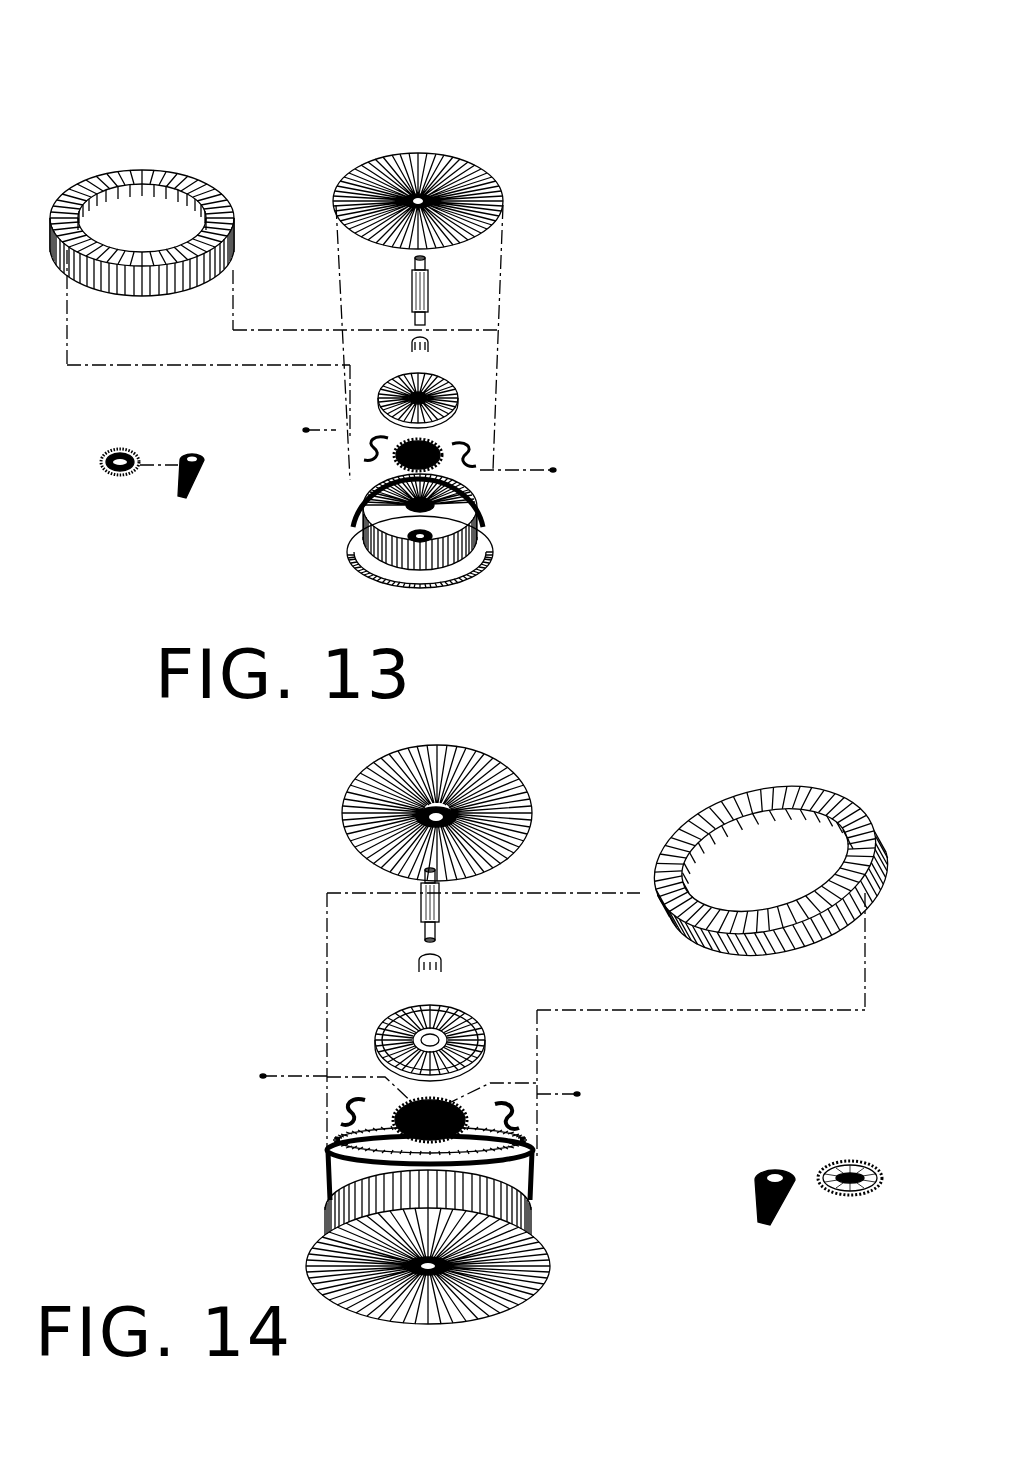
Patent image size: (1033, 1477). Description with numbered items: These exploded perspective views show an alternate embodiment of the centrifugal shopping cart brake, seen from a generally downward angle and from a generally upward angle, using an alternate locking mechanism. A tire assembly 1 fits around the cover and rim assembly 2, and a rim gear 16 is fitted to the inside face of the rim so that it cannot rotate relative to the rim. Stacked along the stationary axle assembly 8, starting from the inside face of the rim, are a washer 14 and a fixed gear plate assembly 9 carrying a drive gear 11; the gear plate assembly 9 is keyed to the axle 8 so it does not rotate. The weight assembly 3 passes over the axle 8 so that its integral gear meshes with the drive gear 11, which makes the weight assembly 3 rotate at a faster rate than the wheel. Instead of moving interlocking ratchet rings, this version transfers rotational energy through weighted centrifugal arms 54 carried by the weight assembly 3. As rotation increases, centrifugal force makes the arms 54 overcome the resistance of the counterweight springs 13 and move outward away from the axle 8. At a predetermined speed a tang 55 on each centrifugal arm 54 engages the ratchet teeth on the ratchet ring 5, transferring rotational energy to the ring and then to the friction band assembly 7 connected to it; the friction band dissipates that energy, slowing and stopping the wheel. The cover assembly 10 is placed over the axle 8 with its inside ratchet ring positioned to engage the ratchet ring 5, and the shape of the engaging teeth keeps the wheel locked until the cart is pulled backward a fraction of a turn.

In FIG. 13, the tire assembly 1 is at (172, 165).
In FIG. 14, the tire assembly 1 is at (712, 790).
In FIG. 13, the cover and rim assembly 2 is at (490, 555).
In FIG. 14, the cover and rim assembly 2 is at (310, 1242).
In FIG. 13, the weight assembly 3 is at (440, 445).
In FIG. 14, the weight assembly 3 is at (470, 1140).
In FIG. 13, the ratchet ring 5 is at (462, 398).
In FIG. 14, the ratchet ring 5 is at (380, 1020).
In FIG. 13, the friction band assembly 7 is at (440, 345).
In FIG. 14, the friction band assembly 7 is at (415, 963).
In FIG. 13, the axle assembly 8 is at (440, 282).
In FIG. 14, the axle assembly 8 is at (410, 893).
In FIG. 13, the gear plate assembly 9 is at (192, 452).
In FIG. 14, the gear plate assembly 9 is at (757, 1190).
In FIG. 13, the cover assembly 10 is at (486, 168).
In FIG. 14, the cover assembly 10 is at (520, 768).
In FIG. 13, the drive gear 11 is at (120, 478).
In FIG. 14, the drive gear 11 is at (848, 1163).
In FIG. 13, the counterweight springs 13 is at (302, 428).
In FIG. 14, the counterweight springs 13 is at (260, 1073).
In FIG. 13, the washer 14 is at (400, 505).
In FIG. 14, the washer 14 is at (345, 1165).
In FIG. 13, the rim gear 16 is at (418, 540).
In FIG. 14, the rim gear 16 is at (415, 1205).
In FIG. 13, the centrifugal arm 54 is at (472, 449).
In FIG. 14, the centrifugal arm 54 is at (515, 1130).
In FIG. 13, the tang 55 is at (478, 462).
In FIG. 14, the tang 55 is at (520, 1110).